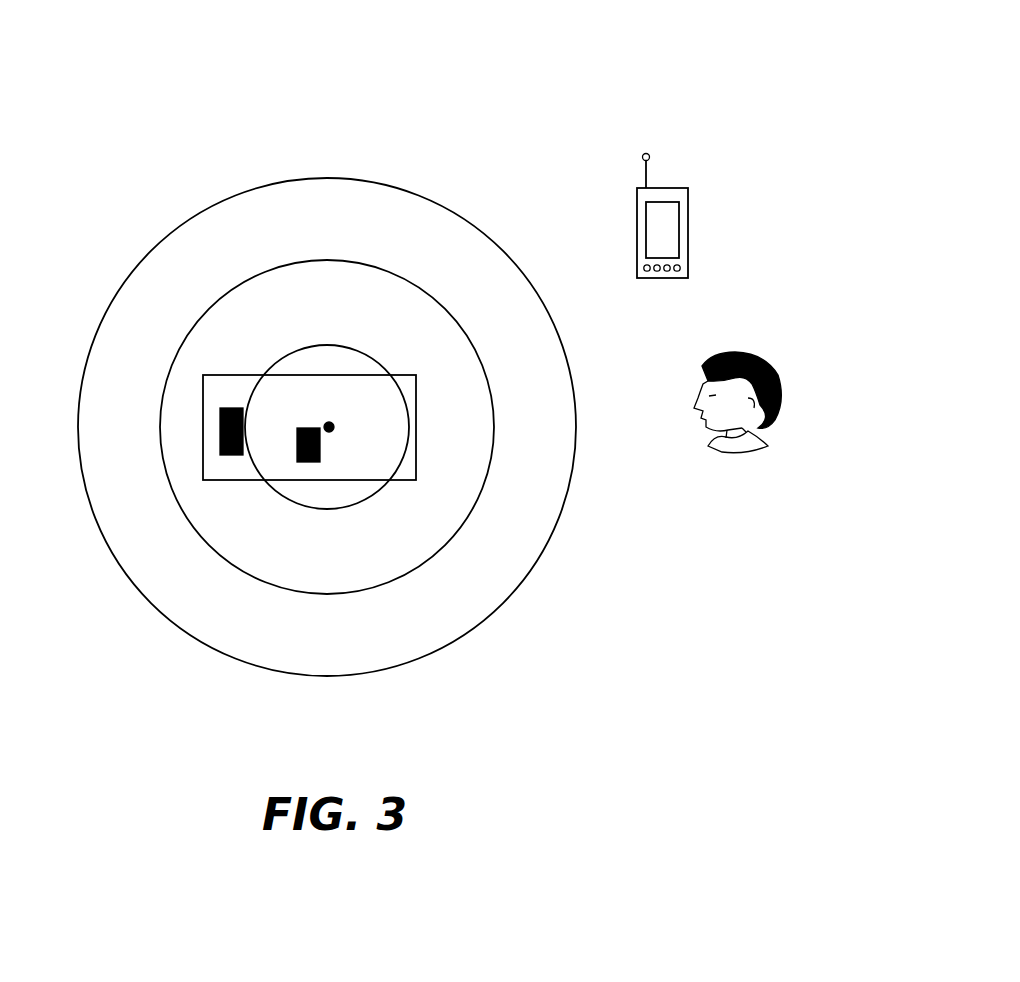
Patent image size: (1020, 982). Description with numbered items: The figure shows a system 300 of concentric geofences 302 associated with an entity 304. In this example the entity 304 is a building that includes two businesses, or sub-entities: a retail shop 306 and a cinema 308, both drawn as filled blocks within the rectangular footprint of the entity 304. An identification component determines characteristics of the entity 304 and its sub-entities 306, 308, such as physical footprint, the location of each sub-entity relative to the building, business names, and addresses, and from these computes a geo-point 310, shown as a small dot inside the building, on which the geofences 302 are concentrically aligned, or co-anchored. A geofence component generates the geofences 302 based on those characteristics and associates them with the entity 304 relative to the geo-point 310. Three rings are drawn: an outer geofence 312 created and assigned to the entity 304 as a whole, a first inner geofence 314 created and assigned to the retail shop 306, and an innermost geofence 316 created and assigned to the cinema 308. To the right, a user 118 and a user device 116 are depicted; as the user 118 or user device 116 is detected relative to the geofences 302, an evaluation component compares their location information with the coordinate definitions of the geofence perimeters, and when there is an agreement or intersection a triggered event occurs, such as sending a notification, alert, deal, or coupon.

The system 300 is at (630, 52).
The concentric geofences 302 is at (112, 208).
The entity 304 is at (402, 375).
The retail shop 306 is at (233, 408).
The cinema 308 is at (308, 462).
The geo-point 310 is at (333, 424).
The outer geofence 312 is at (407, 193).
The first inner geofence 314 is at (376, 267).
The innermost geofence 316 is at (348, 347).
The user device 116 is at (637, 203).
The user 118 is at (736, 352).